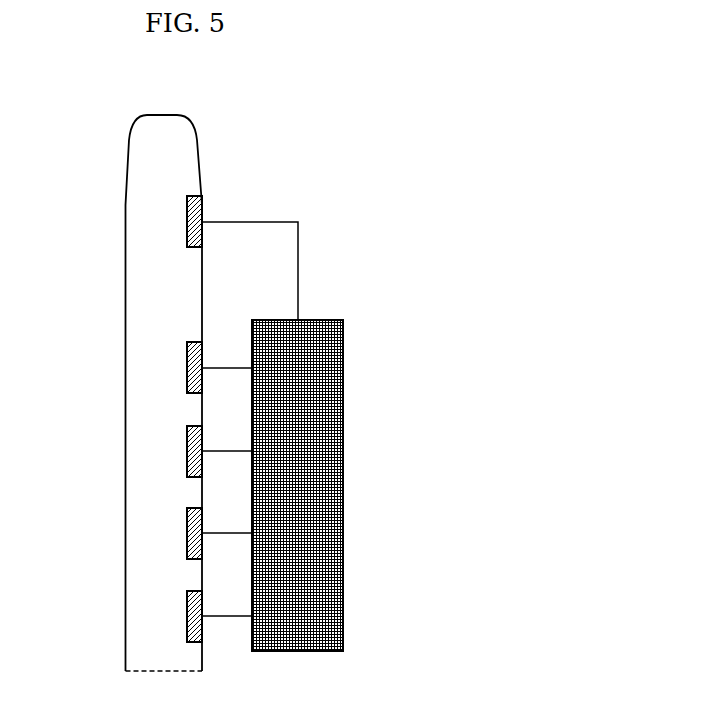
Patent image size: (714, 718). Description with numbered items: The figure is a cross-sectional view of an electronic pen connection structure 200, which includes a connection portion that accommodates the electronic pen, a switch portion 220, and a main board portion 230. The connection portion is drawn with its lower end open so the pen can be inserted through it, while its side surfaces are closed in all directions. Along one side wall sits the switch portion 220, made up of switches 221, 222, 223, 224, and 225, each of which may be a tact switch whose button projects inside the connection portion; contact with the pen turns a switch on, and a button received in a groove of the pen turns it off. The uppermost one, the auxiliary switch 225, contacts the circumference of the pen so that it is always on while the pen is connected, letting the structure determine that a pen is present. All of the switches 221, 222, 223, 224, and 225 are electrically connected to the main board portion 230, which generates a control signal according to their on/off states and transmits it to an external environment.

The electronic pen connection structure 200 is at (395, 110).
The switch portion 220 is at (57, 655).
The switch 221 is at (187, 369).
The switch 222 is at (187, 453).
The switch 223 is at (187, 535).
The switch 224 is at (187, 618).
The auxiliary switch 225 is at (187, 223).
The main board portion 230 is at (343, 483).